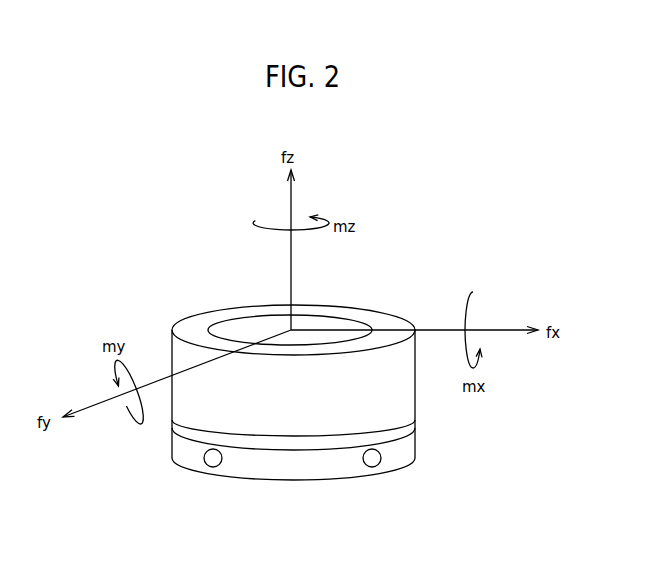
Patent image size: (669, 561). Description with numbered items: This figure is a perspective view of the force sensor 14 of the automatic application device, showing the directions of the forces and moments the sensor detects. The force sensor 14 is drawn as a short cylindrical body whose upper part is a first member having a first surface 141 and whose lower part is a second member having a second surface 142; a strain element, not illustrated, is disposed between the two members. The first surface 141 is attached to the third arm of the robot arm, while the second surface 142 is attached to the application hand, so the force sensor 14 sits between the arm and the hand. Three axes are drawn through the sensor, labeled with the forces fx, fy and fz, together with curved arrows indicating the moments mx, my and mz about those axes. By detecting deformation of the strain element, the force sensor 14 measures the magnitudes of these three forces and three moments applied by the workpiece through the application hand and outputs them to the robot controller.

The force sensor 14 is at (472, 158).
The first surface 141 is at (392, 315).
The second surface 142 is at (352, 478).